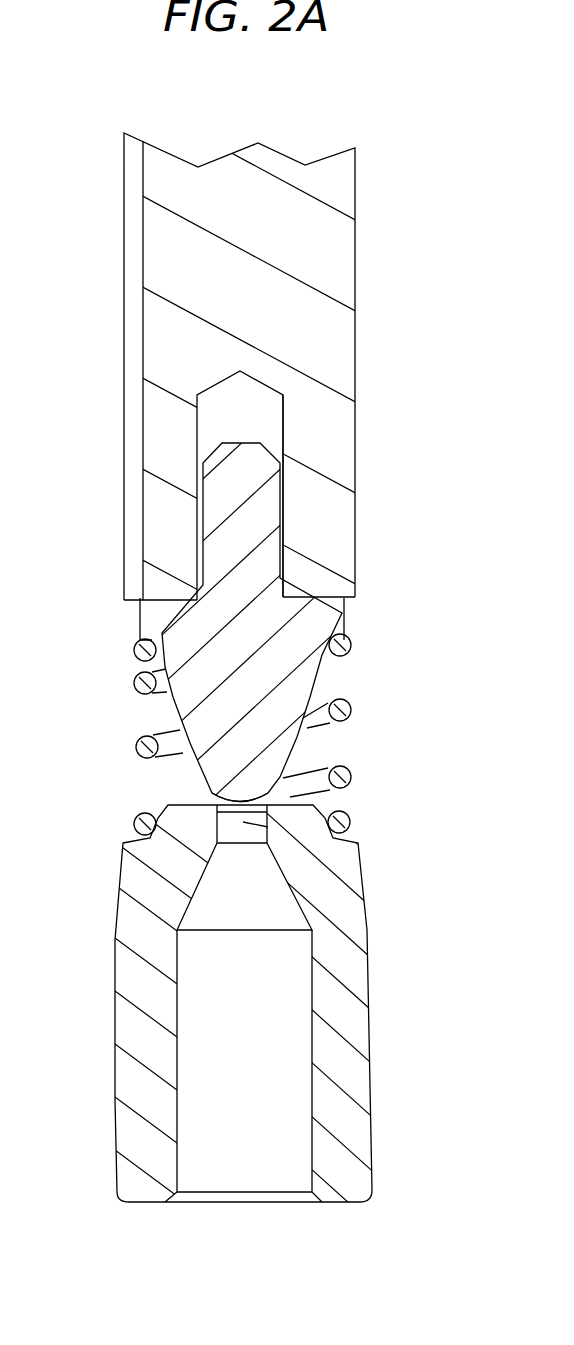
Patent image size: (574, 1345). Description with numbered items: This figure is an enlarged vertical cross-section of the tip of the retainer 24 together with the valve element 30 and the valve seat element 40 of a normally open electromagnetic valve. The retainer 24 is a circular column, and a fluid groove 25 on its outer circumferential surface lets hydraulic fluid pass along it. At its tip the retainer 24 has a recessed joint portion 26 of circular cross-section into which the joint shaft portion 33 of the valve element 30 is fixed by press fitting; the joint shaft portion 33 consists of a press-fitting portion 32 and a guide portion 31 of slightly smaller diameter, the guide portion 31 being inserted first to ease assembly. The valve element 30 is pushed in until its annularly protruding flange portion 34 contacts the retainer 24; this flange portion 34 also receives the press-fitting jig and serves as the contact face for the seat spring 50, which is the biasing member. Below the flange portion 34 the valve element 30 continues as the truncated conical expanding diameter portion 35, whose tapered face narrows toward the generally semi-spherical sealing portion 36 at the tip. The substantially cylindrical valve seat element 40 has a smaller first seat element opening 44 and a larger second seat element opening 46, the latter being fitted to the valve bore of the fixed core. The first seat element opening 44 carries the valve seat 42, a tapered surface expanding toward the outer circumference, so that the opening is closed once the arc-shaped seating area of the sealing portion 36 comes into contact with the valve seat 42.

The retainer 24 is at (157, 326).
The fluid groove 25 is at (135, 443).
The joint portion 26 is at (285, 423).
The valve element 30 is at (228, 645).
The guide portion 31 is at (285, 490).
The press-fitting portion 32 is at (285, 563).
The joint shaft portion 33 is at (276, 482).
The flange portion 34 is at (345, 602).
The expanding diameter portion 35 is at (249, 734).
The sealing portion 36 is at (283, 798).
The valve seat element 40 is at (236, 1043).
The valve seat 42 is at (212, 797).
The first seat element opening 44 is at (290, 837).
The second seat element opening 46 is at (243, 1185).
The seat spring 50 is at (135, 649).